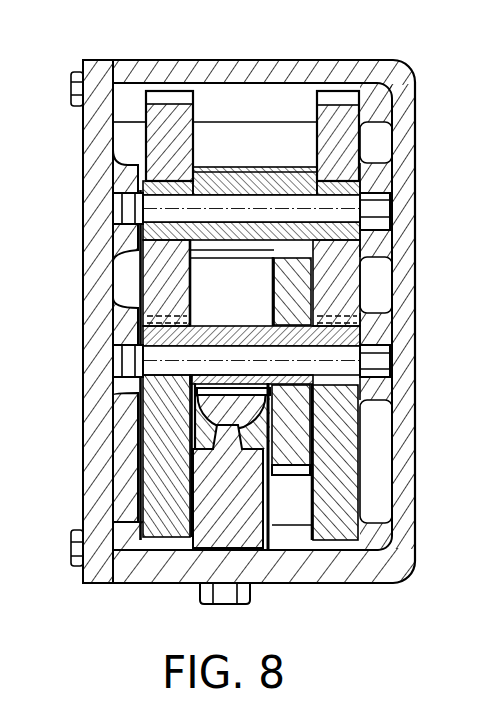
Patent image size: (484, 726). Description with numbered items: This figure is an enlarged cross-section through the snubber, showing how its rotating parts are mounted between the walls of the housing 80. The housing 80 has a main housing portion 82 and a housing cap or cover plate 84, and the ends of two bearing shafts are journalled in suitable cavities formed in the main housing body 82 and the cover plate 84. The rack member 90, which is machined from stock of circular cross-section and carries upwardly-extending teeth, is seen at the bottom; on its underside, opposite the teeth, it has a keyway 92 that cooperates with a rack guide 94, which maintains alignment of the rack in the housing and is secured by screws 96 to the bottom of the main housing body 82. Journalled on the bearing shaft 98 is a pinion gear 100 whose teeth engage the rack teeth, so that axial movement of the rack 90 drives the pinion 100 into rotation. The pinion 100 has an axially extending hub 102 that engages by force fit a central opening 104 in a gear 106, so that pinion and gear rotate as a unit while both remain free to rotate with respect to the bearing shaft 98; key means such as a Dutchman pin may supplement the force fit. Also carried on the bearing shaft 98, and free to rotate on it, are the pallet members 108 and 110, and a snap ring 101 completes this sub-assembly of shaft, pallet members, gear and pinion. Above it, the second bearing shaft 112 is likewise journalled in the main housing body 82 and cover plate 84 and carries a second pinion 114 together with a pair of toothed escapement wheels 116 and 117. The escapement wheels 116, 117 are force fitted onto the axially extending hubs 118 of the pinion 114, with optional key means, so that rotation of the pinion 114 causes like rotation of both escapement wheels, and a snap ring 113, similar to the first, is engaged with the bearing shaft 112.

The housing 80 is at (357, 55).
The main housing portion 82 is at (414, 113).
The cover plate 84 is at (83, 267).
The rack member 90 is at (205, 400).
The keyway 92 is at (207, 482).
The rack guide 94 is at (266, 528).
The screws 96 is at (203, 605).
The bearing shaft 98 is at (388, 356).
The pinion gear 100 is at (218, 327).
The snap ring 101 is at (112, 363).
The hub 102 is at (388, 333).
The central opening 104 is at (390, 368).
The gear 106 is at (274, 290).
The pallet member 108 is at (142, 495).
The pallet member 110 is at (356, 462).
The second bearing shaft 112 is at (390, 205).
The snap ring 113 is at (137, 200).
The second pinion 114 is at (255, 181).
The toothed escapement wheel 116 is at (160, 143).
The toothed escapement wheel 117 is at (358, 150).
The hubs 118 is at (163, 184).